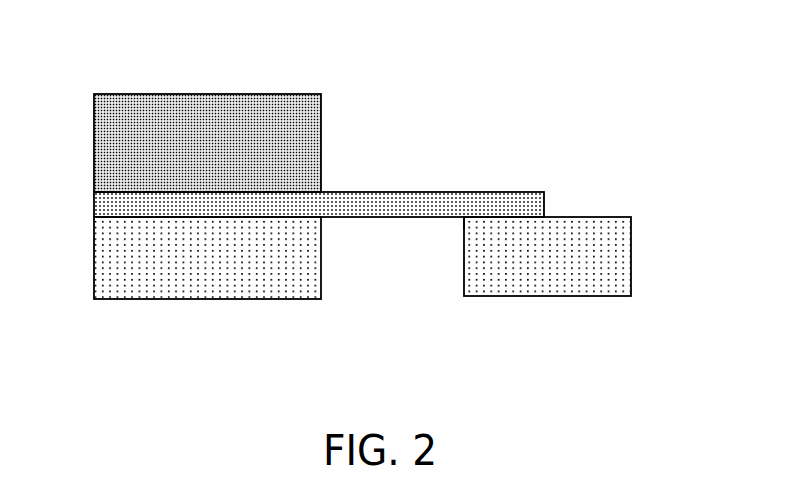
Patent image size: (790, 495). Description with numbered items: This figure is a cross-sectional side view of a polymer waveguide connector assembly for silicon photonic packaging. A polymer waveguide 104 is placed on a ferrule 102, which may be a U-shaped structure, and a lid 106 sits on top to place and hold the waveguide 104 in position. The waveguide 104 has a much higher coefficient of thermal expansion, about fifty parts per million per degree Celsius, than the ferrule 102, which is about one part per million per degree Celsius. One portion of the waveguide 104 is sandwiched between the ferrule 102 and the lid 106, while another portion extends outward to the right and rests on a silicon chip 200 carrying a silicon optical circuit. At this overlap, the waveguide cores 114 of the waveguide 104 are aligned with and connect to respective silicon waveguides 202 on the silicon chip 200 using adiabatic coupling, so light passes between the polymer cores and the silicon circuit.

The ferrule 102 is at (193, 299).
The polymer waveguide 104 is at (390, 192).
The lid 106 is at (204, 94).
The waveguide cores 114 is at (485, 210).
The silicon chip 200 is at (545, 296).
The silicon waveguides 202 is at (491, 221).